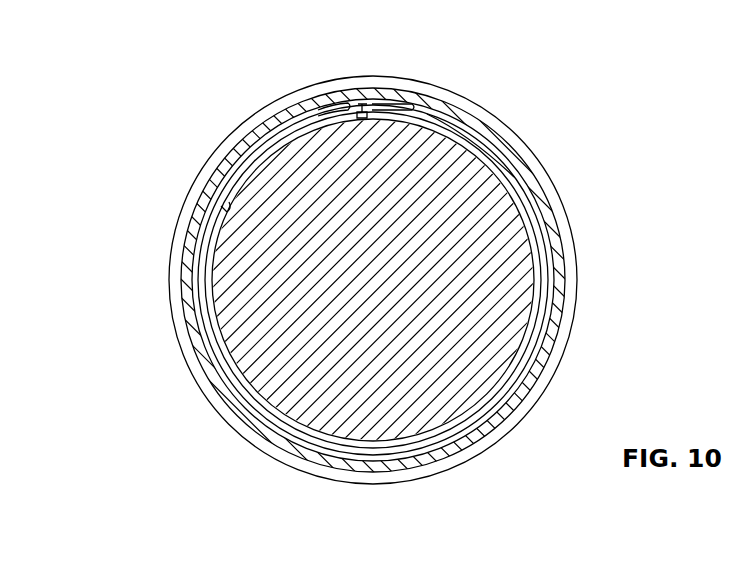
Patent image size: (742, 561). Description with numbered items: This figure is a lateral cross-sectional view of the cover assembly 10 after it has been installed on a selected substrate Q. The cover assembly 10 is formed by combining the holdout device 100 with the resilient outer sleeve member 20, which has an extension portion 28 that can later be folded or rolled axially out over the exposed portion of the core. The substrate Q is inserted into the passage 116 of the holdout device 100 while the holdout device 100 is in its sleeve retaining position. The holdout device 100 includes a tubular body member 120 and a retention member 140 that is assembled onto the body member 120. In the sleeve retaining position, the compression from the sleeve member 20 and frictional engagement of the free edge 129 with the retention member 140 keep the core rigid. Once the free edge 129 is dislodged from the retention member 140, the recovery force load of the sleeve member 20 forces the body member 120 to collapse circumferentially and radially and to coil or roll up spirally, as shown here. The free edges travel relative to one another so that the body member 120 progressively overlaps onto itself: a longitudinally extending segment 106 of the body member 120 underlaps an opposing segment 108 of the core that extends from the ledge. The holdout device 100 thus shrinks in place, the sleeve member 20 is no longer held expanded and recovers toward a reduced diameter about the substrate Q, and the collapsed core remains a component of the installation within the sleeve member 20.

The cover assembly 10 is at (547, 70).
The resilient outer sleeve member 20 is at (508, 150).
The extension portion 28 is at (178, 312).
The holdout device 100 is at (234, 398).
The longitudinally extending segment 106 is at (272, 150).
The opposing segment 108 is at (236, 200).
The passage 116 is at (466, 368).
The tubular body member 120 is at (220, 360).
The free edge 129 is at (224, 210).
The retention member 140 is at (363, 102).
The substrate Q is at (490, 285).